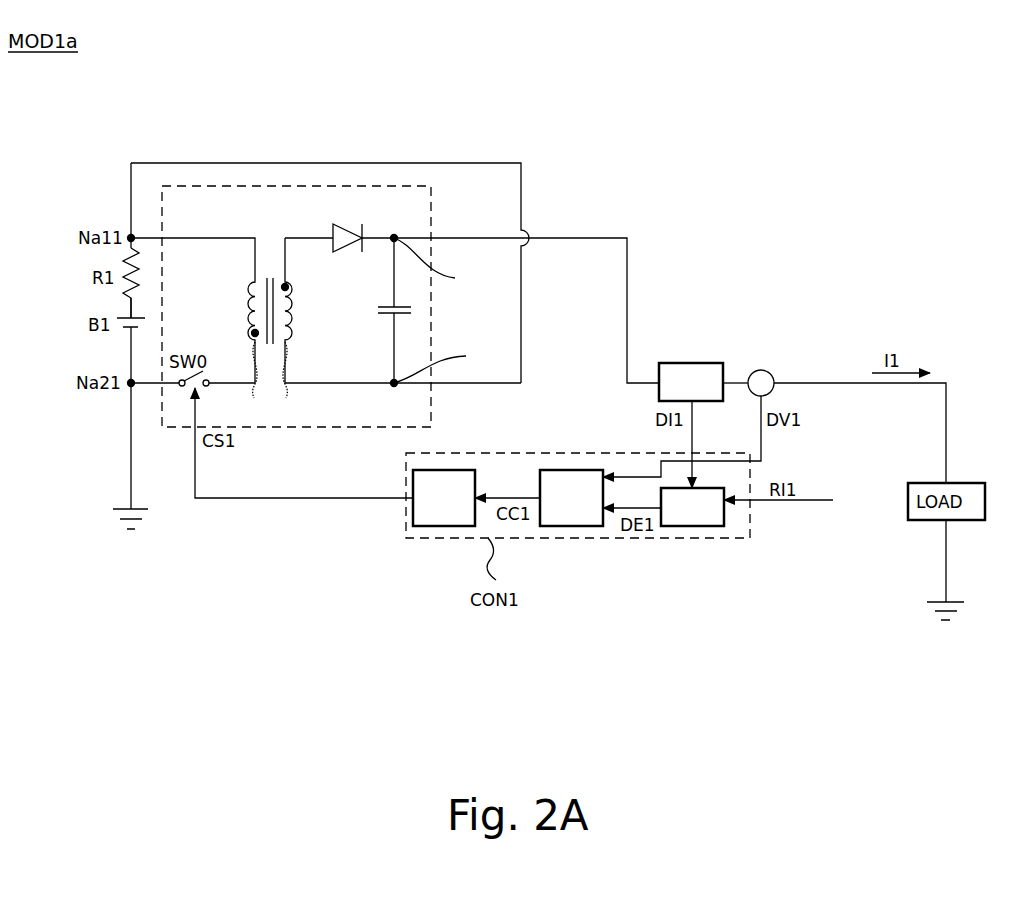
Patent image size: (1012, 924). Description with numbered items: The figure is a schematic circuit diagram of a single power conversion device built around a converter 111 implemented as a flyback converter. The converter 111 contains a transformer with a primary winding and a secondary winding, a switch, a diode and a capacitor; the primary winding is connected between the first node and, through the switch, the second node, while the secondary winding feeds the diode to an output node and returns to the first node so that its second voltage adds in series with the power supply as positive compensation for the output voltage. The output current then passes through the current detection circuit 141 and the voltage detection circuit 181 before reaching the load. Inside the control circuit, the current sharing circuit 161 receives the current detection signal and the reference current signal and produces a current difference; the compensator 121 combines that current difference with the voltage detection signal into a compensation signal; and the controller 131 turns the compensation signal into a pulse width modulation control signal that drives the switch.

The converter 111 is at (431, 205).
The compensator 121 is at (586, 508).
The controller 131 is at (458, 508).
The current detection circuit 141 is at (705, 393).
The current sharing circuit 161 is at (706, 518).
The voltage detection circuit 181 is at (761, 370).